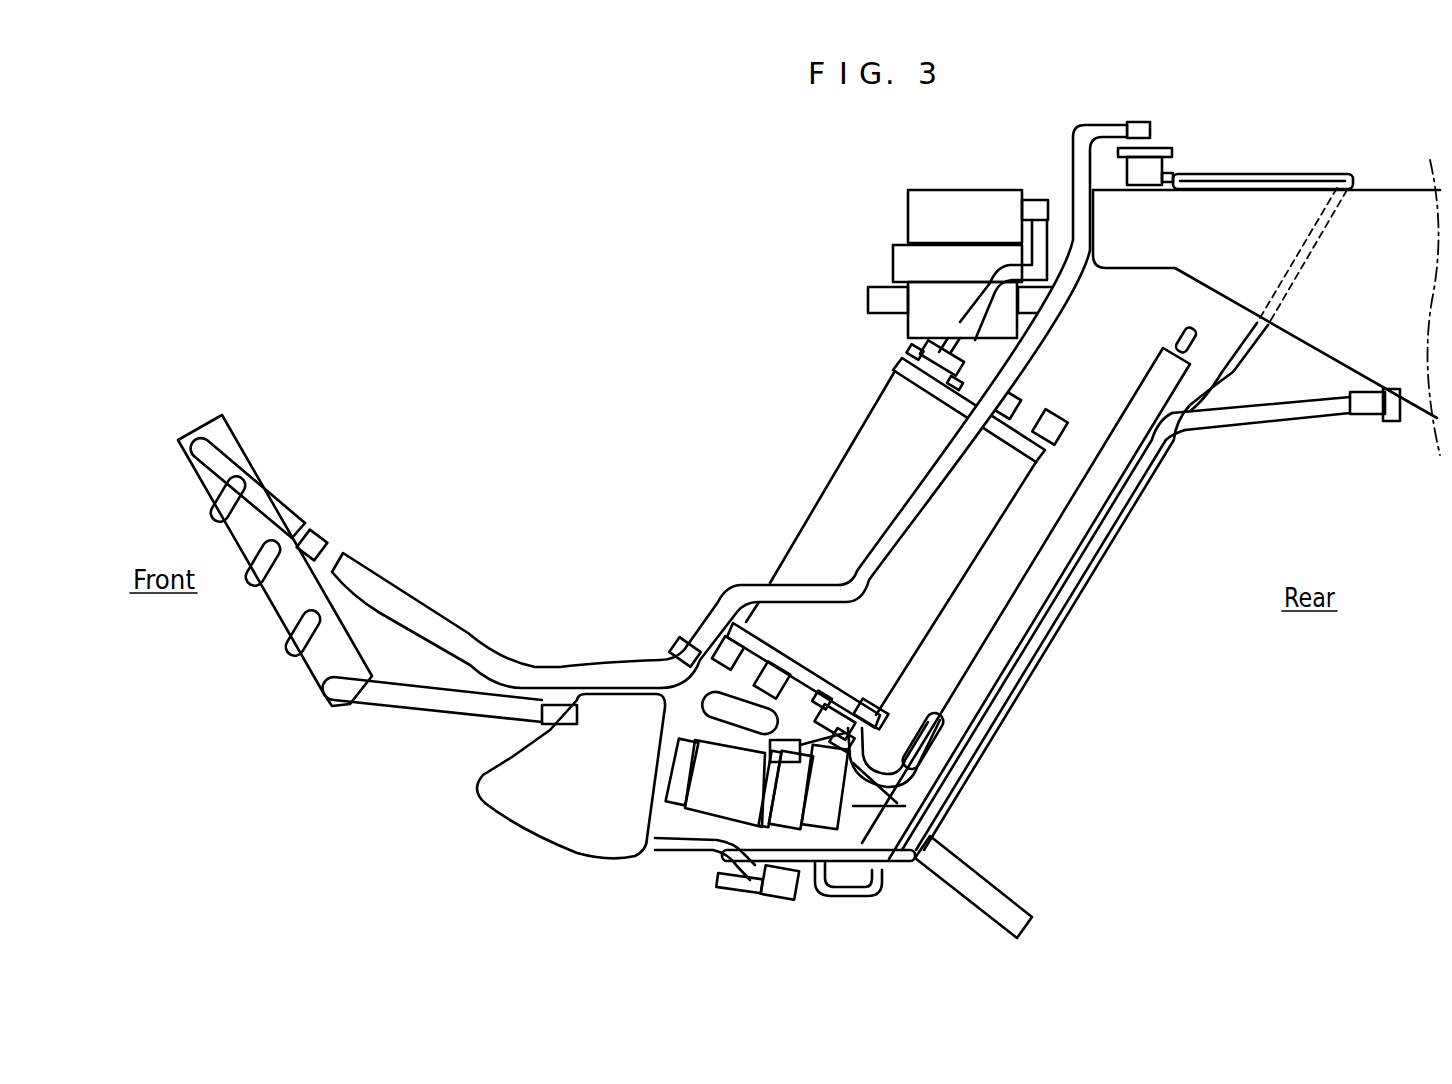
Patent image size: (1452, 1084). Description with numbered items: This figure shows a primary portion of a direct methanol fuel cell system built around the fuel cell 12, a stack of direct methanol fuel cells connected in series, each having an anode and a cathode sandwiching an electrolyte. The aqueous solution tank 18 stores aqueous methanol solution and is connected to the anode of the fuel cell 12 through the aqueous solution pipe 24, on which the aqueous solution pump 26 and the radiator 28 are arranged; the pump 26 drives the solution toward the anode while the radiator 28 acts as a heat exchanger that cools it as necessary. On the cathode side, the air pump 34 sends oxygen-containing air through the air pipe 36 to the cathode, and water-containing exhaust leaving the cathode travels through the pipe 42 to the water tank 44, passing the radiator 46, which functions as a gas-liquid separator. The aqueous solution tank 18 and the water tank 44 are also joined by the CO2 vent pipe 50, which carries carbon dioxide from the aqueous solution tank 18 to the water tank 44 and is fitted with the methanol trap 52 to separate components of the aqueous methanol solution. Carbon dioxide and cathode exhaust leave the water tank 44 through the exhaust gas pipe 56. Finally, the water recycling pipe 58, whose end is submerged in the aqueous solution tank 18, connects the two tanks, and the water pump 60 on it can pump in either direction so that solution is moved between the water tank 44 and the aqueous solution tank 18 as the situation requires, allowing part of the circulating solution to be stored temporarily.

The fuel cell 12 is at (848, 492).
The aqueous solution tank 18 is at (1393, 203).
The aqueous solution pipe 24 is at (1262, 418).
The aqueous solution pump 26 is at (710, 803).
The radiator 28 is at (1143, 397).
The air pump 34 is at (918, 223).
The air pipe 36 is at (1050, 230).
The pipe 42 is at (418, 702).
The water tank 44 is at (565, 833).
The radiator 46 is at (273, 602).
The CO2 vent pipe 50 is at (717, 603).
The methanol trap 52 is at (1165, 147).
The exhaust gas pipe 56 is at (975, 883).
The water recycling pipe 58 is at (1117, 522).
The water pump 60 is at (778, 887).